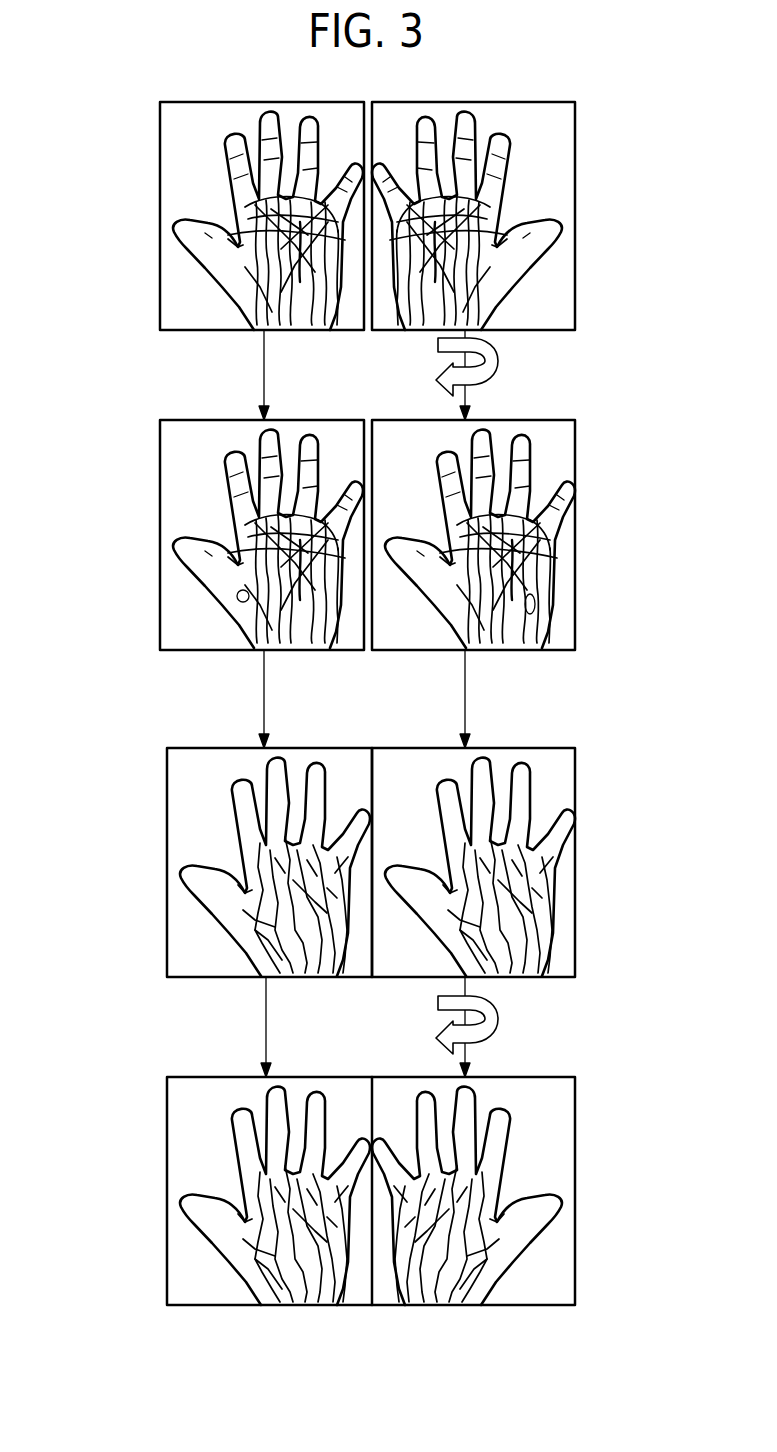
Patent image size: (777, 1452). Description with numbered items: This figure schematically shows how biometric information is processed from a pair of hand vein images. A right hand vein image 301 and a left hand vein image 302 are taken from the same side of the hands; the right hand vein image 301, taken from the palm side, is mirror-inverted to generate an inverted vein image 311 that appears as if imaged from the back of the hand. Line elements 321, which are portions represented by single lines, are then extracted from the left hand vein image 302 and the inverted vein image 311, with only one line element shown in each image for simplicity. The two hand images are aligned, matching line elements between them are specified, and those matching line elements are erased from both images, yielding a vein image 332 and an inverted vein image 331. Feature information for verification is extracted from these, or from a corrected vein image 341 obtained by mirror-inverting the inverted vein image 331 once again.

The right hand vein image 301 is at (577, 310).
The left hand vein image 302 is at (160, 292).
The inverted vein image 311 is at (577, 632).
The line elements 321 is at (237, 597).
The inverted vein image 331 is at (577, 930).
The vein image 332 is at (167, 938).
The corrected vein image 341 is at (577, 1176).